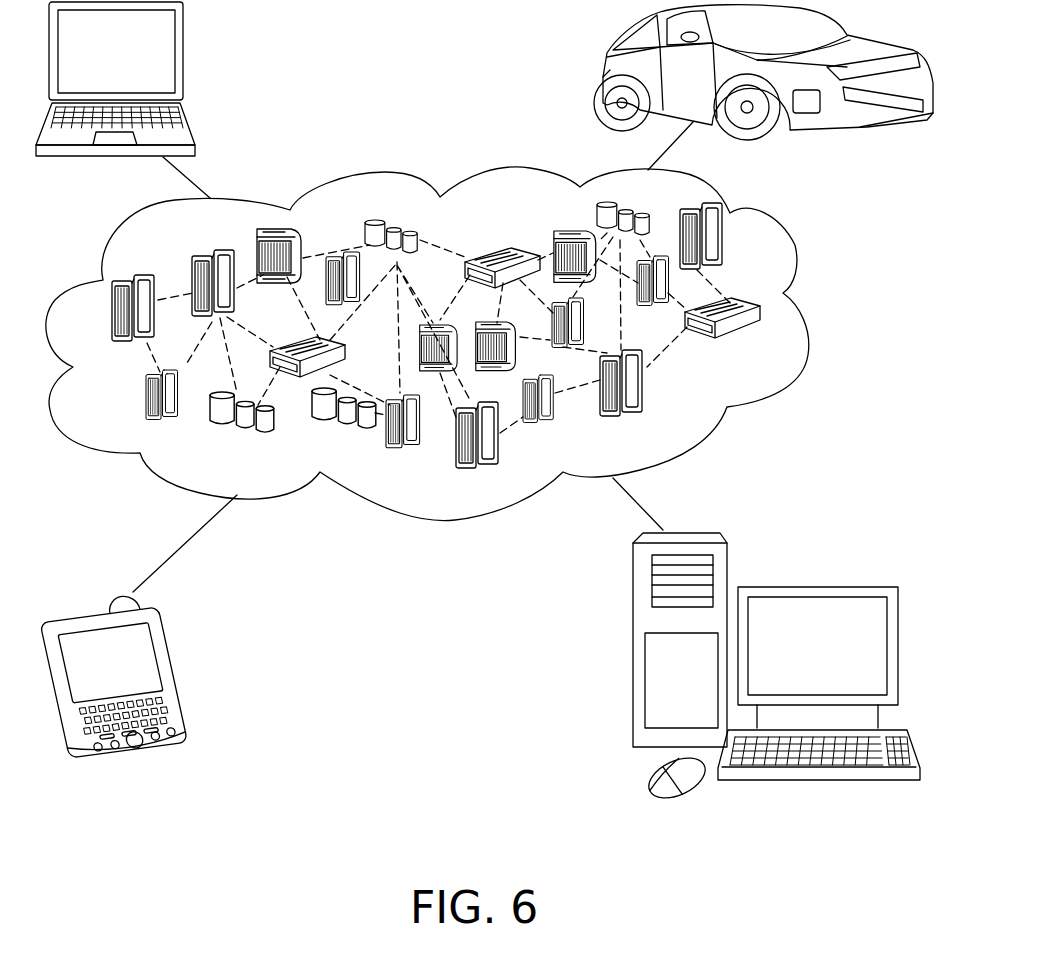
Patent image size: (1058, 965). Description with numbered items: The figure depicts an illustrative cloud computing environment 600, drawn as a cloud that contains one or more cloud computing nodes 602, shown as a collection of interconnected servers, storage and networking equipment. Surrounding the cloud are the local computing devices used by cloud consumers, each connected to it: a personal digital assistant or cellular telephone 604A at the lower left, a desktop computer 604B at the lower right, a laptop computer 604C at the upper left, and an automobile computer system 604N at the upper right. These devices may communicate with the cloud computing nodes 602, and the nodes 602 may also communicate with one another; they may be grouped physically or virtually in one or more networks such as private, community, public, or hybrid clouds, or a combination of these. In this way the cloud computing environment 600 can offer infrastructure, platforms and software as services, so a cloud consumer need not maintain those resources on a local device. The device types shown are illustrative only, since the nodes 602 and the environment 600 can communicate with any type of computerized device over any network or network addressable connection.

The cloud computing environment 600 is at (768, 312).
The cloud computing nodes 602 is at (762, 346).
The personal digital assistant (PDA) or cellular telephone 604A is at (160, 647).
The desktop computer 604B is at (803, 587).
The laptop computer 604C is at (183, 37).
The automobile computer system 604N is at (608, 80).